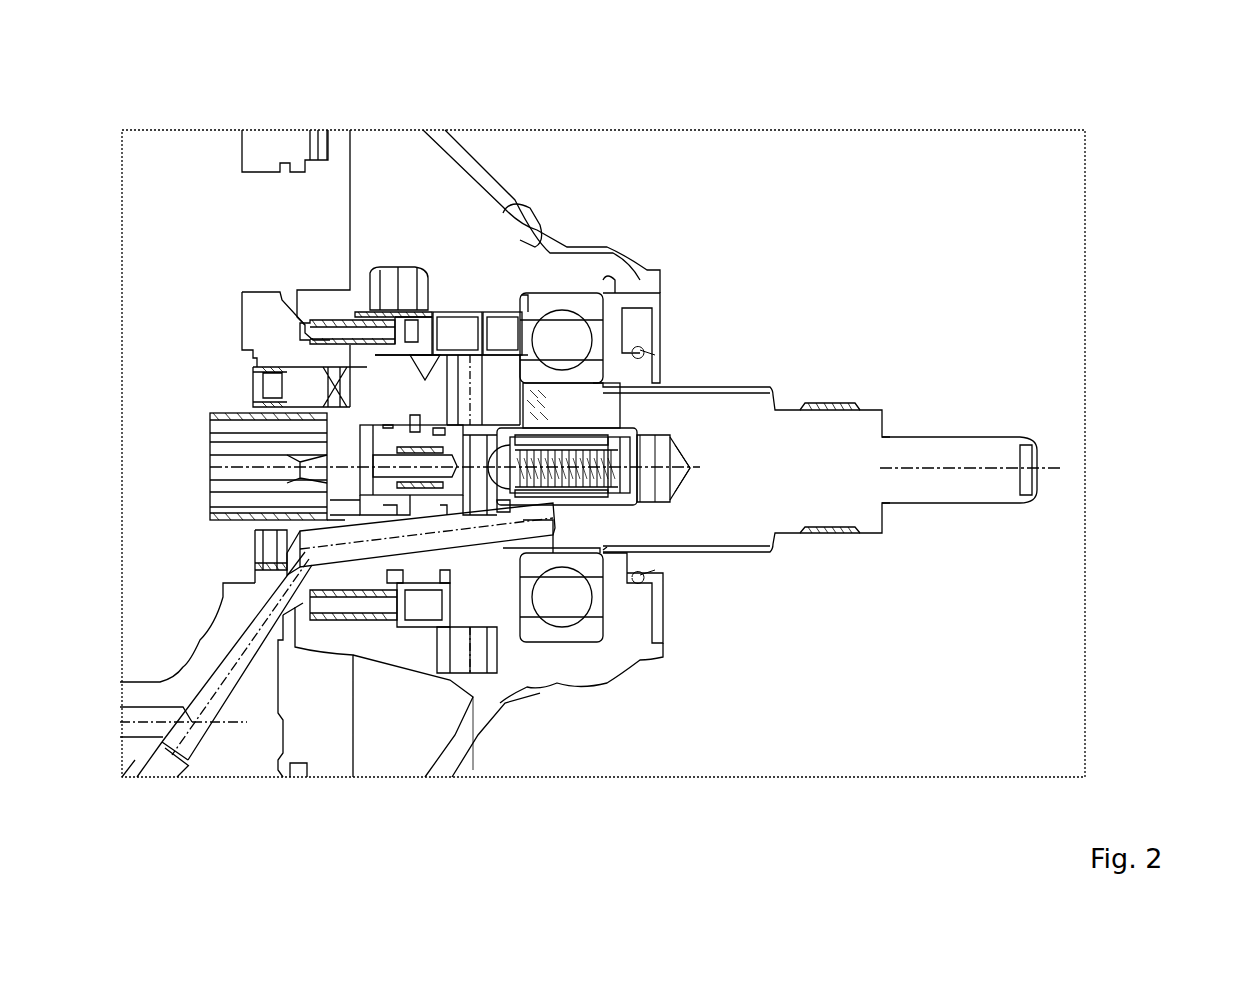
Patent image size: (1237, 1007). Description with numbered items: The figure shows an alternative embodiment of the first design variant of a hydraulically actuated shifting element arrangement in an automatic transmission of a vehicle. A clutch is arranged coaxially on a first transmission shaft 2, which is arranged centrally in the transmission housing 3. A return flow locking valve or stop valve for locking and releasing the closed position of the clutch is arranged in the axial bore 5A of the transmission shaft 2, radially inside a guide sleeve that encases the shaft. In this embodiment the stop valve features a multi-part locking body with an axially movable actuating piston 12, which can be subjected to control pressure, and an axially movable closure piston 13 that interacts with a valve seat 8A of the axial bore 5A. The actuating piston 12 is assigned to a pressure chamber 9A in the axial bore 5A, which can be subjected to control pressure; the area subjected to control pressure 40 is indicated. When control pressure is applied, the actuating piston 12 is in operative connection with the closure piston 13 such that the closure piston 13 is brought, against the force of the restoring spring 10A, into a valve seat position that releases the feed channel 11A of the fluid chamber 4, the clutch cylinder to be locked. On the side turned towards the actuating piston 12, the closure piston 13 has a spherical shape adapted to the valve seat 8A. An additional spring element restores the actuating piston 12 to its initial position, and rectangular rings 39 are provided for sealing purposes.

The first transmission shaft 2 is at (960, 453).
The transmission housing 3 is at (502, 345).
The fluid chamber 4 is at (468, 472).
The axial bore 5A is at (650, 430).
The valve seat 8A is at (598, 425).
The pressure chamber 9A is at (340, 425).
The restoring spring 10A is at (690, 458).
The feed channel 11A is at (533, 327).
The actuating piston 12 is at (500, 508).
The closure piston 13 is at (500, 455).
The rectangular ring 39 is at (482, 318).
The area subjected to control pressure 40 is at (370, 308).